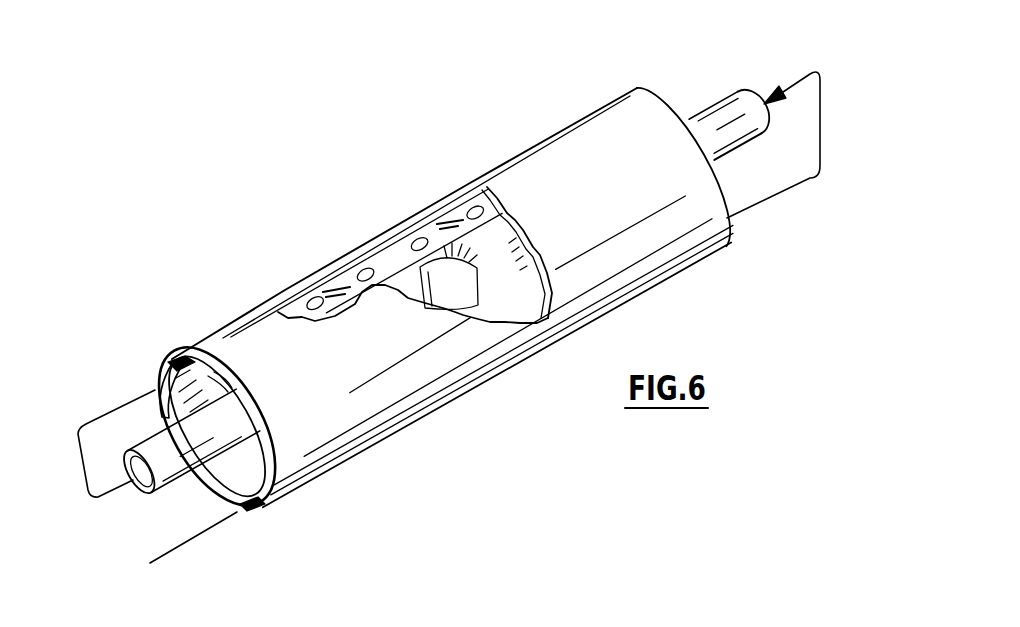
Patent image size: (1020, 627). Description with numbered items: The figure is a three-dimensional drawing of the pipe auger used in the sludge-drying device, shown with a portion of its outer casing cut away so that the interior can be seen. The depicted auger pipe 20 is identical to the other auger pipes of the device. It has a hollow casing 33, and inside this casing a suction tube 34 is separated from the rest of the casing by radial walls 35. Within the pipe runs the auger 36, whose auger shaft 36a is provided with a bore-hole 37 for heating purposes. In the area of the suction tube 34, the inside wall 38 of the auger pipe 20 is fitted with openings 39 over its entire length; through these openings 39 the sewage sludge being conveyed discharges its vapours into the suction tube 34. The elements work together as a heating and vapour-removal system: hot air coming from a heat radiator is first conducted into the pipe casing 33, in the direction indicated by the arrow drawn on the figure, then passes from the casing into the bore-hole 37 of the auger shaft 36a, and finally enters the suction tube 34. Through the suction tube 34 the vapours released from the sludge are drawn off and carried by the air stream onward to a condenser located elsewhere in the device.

The auger pipe 20 is at (470, 412).
The hollow casing 33 is at (273, 478).
The suction tube 34 is at (190, 352).
The radial walls 35 is at (233, 379).
The auger 36 is at (548, 318).
The auger shaft 36a is at (719, 102).
The bore-hole 37 is at (143, 494).
The inside wall 38 is at (400, 257).
The openings 39 is at (313, 298).